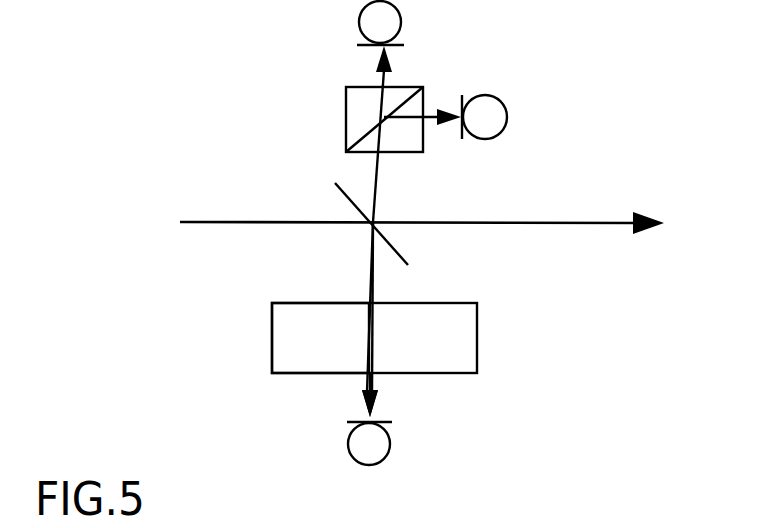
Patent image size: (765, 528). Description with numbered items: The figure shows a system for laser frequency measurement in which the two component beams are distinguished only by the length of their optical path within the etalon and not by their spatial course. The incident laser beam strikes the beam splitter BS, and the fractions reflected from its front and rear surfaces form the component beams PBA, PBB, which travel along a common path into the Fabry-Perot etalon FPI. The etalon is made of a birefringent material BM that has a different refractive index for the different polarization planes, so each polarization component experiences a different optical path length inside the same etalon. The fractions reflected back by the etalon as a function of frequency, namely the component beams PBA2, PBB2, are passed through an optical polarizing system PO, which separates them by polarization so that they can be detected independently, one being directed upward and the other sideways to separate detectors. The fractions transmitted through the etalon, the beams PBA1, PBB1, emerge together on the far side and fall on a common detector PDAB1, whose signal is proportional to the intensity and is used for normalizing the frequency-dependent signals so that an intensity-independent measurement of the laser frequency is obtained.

The beam splitter BS is at (349, 217).
The component beam reflected by the etalon PBA2 is at (348, 111).
The optical polarizing system PO is at (357, 119).
The component beam reflected by the etalon PBB2 is at (445, 147).
The component beam PBA is at (339, 307).
The component beam PBB is at (339, 307).
The Fabry-Perot etalon FPI is at (343, 338).
The birefringent material BM is at (320, 338).
The beam transmitted by the etalon PBA1 is at (427, 396).
The transmitted beam PBB1 is at (432, 422).
The common detector PDAB1 is at (320, 445).